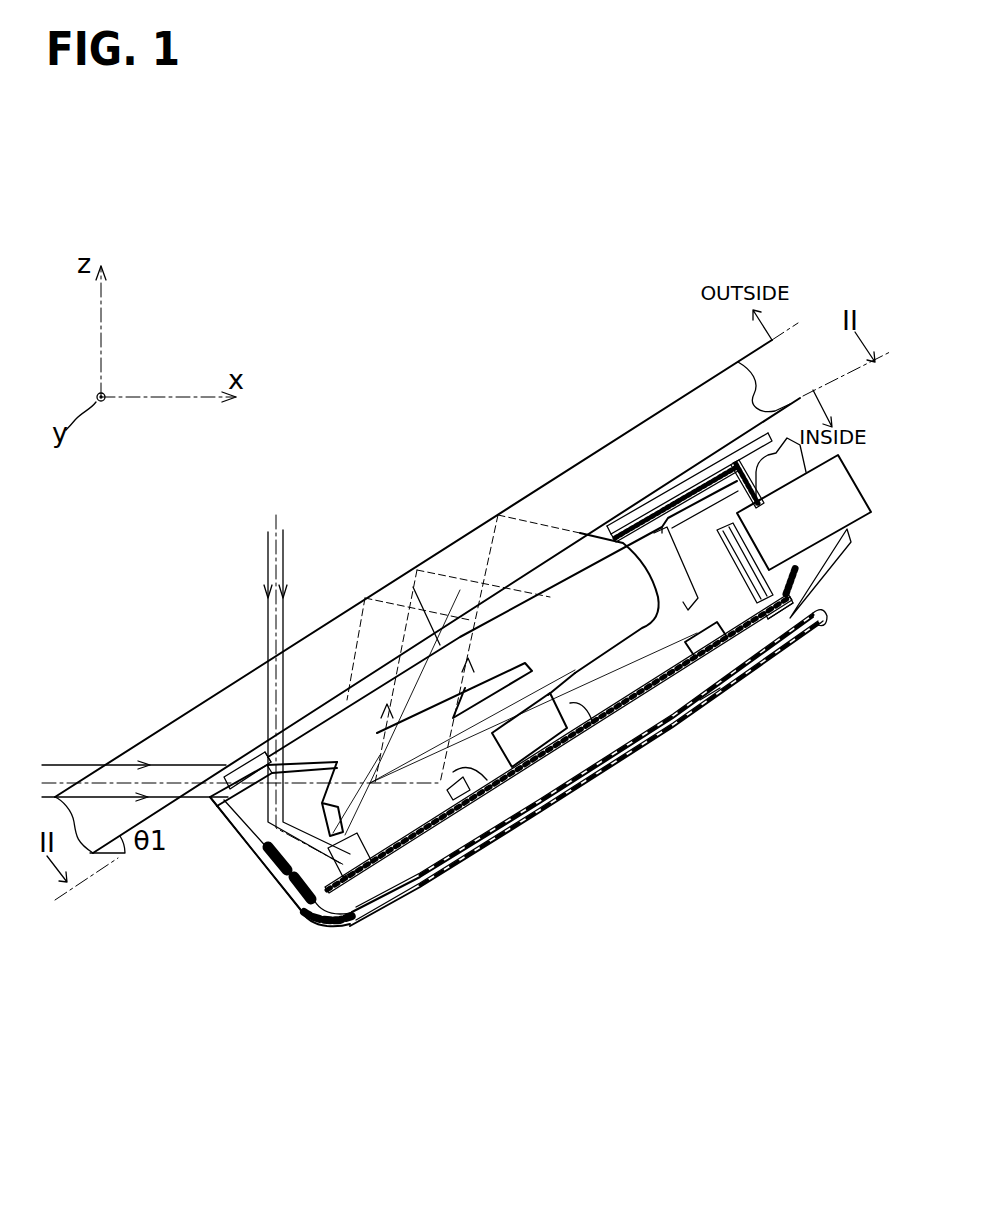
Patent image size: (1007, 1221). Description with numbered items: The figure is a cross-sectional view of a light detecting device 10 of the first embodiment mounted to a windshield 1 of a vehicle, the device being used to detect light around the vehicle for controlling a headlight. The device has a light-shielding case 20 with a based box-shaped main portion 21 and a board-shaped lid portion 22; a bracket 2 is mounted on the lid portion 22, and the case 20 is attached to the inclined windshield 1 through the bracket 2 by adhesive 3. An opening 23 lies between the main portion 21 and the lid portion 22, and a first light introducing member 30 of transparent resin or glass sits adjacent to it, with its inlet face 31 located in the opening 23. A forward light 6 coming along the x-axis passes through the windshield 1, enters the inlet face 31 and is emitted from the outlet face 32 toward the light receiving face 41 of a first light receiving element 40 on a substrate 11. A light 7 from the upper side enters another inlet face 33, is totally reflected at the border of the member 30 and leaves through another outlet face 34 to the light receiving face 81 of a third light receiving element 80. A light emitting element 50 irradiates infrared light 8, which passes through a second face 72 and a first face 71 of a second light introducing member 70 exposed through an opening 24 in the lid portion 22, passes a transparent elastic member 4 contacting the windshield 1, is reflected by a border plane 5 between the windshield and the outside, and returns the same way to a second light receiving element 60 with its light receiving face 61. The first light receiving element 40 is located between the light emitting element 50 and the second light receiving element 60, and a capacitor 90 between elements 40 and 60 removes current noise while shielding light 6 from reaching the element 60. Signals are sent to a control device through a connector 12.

The windshield 1 is at (690, 395).
The bracket 2 is at (688, 478).
The adhesive 3 is at (660, 497).
The elastic member 4 is at (600, 520).
The border plane 5 is at (452, 548).
The light 6 is at (63, 763).
The light 7 is at (263, 558).
The infrared light 8 is at (403, 635).
The light detecting device 10 is at (292, 972).
The substrate 11 is at (717, 702).
The connector 12 is at (849, 478).
The case 20 is at (823, 608).
The main portion 21 is at (824, 622).
The lid portion 22 is at (633, 524).
The opening 23 is at (226, 770).
The opening 24 is at (575, 538).
The first light introducing member 30 is at (262, 860).
The inlet face 31 is at (240, 760).
The outlet face 32 is at (440, 875).
The inlet face 33 is at (258, 757).
The outlet face 34 is at (293, 902).
The first light receiving element 40 is at (512, 810).
The light receiving face 41 is at (500, 786).
The light emitting element 50 is at (383, 875).
The second light receiving element 60 is at (790, 615).
The light receiving face 61 is at (793, 595).
The second light introducing member 70 is at (627, 712).
The first face 71 is at (440, 645).
The second face 72 is at (667, 712).
The third light receiving element 80 is at (318, 926).
The light receiving face 81 is at (264, 866).
The capacitor 90 is at (557, 766).